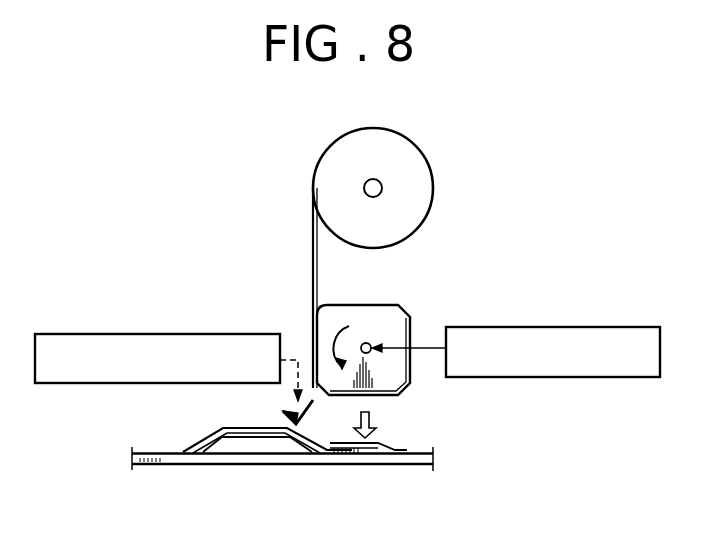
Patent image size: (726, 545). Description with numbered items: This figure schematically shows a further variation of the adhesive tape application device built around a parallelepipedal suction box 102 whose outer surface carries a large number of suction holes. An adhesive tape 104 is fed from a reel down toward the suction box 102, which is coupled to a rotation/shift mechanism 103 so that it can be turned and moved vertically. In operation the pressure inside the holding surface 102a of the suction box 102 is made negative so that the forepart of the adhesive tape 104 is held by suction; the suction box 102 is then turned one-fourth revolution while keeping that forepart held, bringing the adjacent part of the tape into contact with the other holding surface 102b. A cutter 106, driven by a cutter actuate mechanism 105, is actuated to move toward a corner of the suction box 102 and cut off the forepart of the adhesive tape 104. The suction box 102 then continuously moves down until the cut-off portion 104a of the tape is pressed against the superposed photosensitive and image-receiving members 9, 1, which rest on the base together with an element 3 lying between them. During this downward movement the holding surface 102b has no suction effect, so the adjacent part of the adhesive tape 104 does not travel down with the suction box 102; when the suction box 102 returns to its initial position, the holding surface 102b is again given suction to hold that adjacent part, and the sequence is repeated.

The image-receiving member 1 is at (216, 464).
The dome 3 is at (268, 443).
The photosensitive member 9 is at (198, 437).
The suction box 102 is at (383, 317).
The holding surface 102a is at (382, 395).
The holding surface 102b is at (329, 325).
The rotation/shift mechanism 103 is at (530, 327).
The adhesive tape 104 is at (424, 190).
The tape piece 104a is at (388, 453).
The cutter actuate mechanism 105 is at (130, 334).
The cutter 106 is at (283, 411).